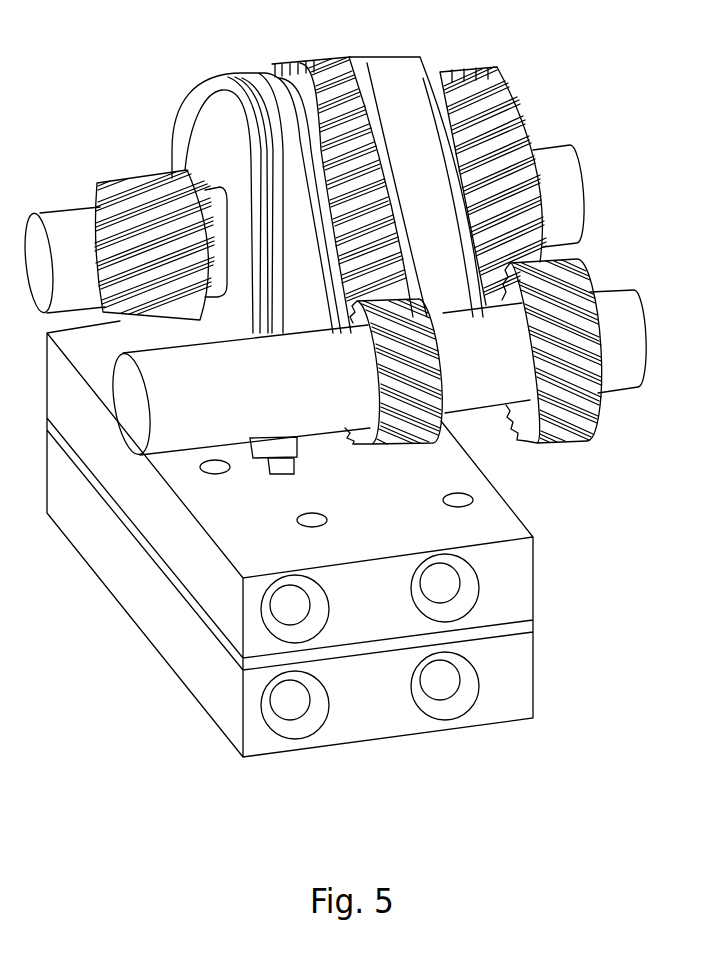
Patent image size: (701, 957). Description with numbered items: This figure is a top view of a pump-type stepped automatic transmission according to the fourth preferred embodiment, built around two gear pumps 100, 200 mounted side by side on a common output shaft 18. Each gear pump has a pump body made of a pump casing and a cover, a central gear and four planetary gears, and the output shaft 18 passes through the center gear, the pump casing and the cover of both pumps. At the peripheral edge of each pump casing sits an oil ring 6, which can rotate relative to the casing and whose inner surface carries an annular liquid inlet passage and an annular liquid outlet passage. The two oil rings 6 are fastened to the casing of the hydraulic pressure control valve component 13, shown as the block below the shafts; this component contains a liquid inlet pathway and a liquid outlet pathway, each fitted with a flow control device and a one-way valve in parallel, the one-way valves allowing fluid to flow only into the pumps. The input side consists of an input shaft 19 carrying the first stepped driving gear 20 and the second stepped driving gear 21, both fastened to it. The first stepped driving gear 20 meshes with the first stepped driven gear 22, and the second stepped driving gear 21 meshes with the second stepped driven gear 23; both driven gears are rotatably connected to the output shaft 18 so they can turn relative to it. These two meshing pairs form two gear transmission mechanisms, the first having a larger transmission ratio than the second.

The gear pump 100 is at (205, 128).
The gear pump 200 is at (425, 62).
The oil ring 6 is at (247, 86).
The first stepped driven gear 22 is at (318, 70).
The second stepped driven gear 23 is at (499, 80).
The output shaft 18 is at (556, 163).
The input shaft 19 is at (625, 318).
The first stepped driving gear 20 is at (401, 444).
The second stepped driving gear 21 is at (563, 430).
The hydraulic pressure control valve component 13 is at (523, 582).